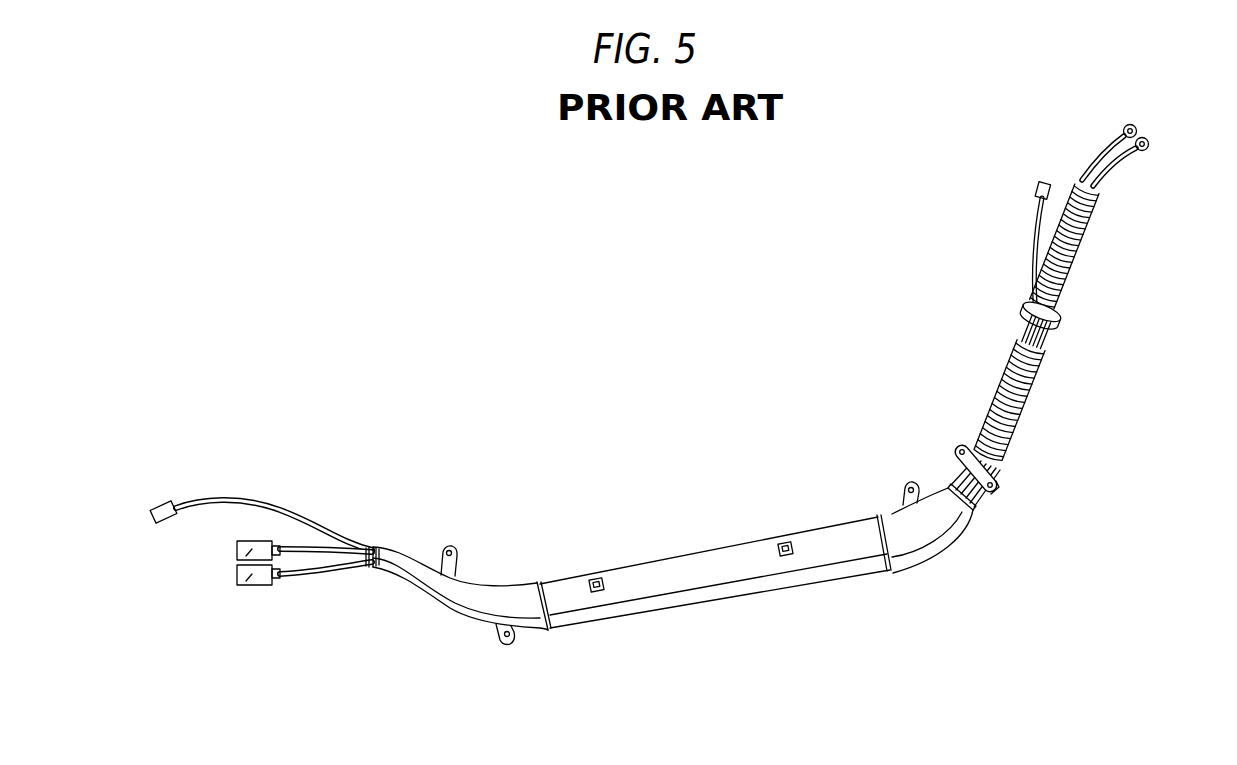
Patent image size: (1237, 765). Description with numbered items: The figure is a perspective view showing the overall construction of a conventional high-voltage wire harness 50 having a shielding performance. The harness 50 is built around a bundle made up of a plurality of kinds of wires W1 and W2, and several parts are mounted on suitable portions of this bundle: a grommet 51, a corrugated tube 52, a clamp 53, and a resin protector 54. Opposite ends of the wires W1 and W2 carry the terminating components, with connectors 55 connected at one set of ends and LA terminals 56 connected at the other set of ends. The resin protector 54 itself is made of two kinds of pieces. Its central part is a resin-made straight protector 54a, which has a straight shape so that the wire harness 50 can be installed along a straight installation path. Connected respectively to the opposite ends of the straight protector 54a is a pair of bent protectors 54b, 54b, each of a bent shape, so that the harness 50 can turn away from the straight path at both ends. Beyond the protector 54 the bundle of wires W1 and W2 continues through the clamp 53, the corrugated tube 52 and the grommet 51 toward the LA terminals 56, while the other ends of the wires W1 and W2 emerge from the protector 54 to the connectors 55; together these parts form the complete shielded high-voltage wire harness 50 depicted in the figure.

The high-voltage wire harness 50 is at (714, 418).
The grommet 51 is at (1060, 318).
The corrugated tube 52 is at (1032, 391).
The clamp 53 is at (1000, 490).
The resin protector 54 is at (689, 551).
The straight protector 54a is at (700, 583).
The bent protector 54b is at (470, 603).
The connector 55 is at (237, 578).
The LA terminal 56 is at (1146, 143).
The wire W1 is at (238, 498).
The wire W2 is at (335, 556).